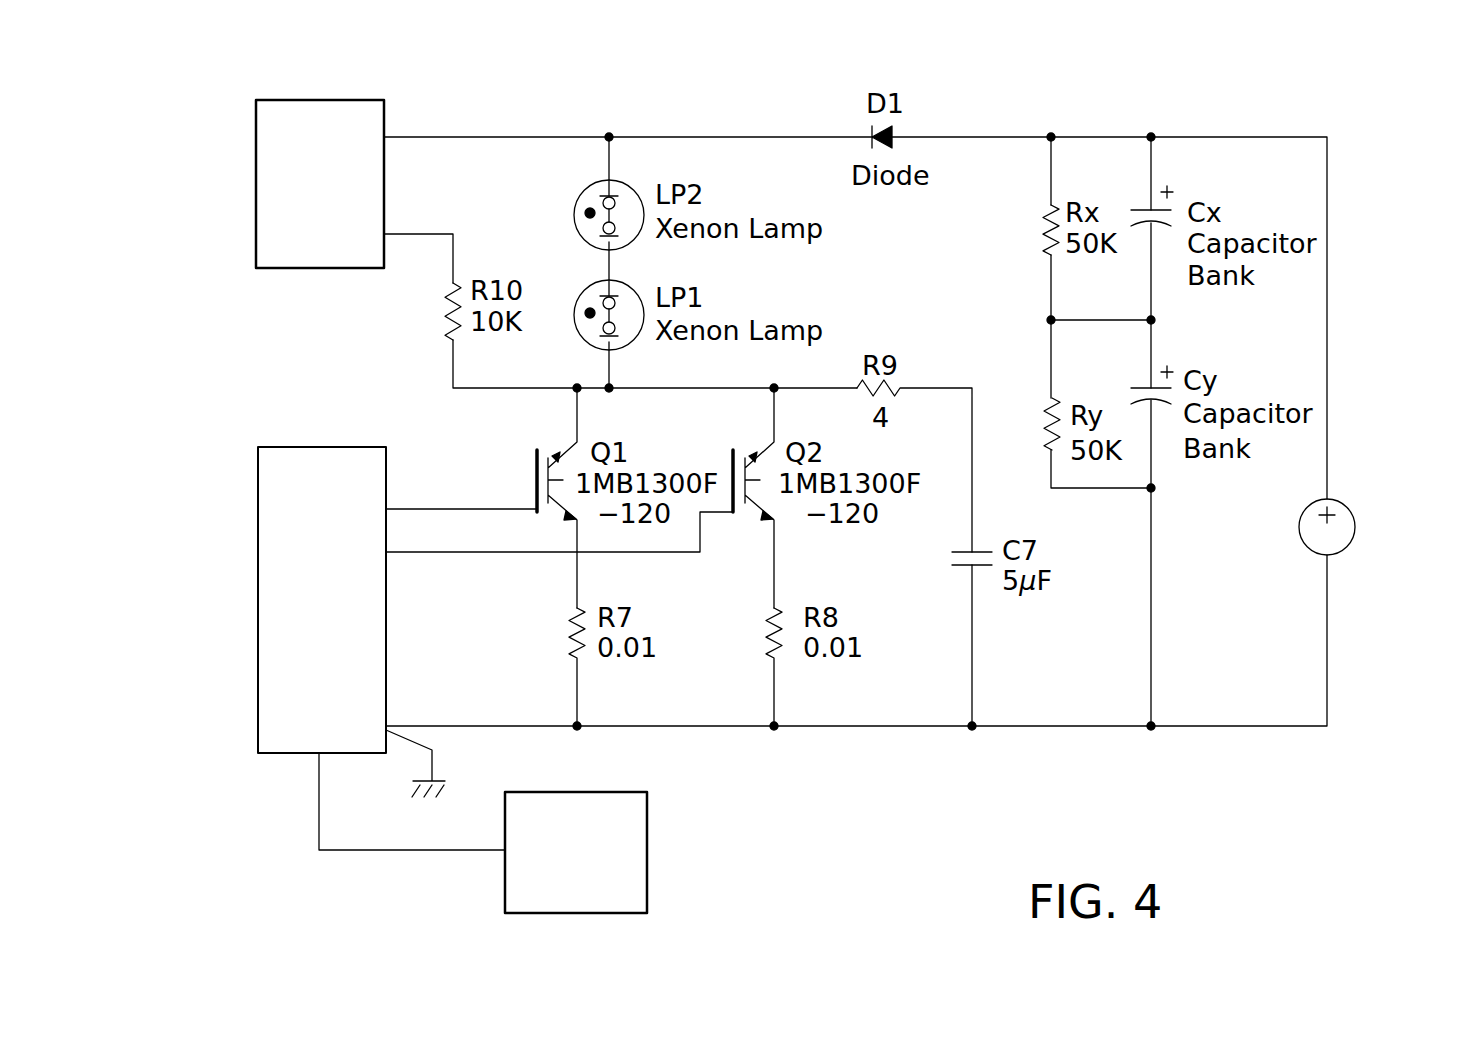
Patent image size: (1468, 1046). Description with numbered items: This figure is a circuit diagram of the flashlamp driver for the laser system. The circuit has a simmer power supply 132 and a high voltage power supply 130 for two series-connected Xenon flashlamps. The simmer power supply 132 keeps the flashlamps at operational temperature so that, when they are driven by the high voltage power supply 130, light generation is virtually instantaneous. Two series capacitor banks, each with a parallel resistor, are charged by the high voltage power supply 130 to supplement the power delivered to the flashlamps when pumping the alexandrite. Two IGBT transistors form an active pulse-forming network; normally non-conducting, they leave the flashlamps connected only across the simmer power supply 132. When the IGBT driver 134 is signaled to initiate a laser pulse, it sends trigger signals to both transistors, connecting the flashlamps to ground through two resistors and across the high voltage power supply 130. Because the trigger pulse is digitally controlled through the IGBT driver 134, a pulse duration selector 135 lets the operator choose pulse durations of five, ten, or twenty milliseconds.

The high voltage power supply 130 is at (1345, 506).
The simmer power supply 132 is at (330, 100).
The IGBT driver 134 is at (350, 668).
The pulse duration selector 135 is at (647, 866).